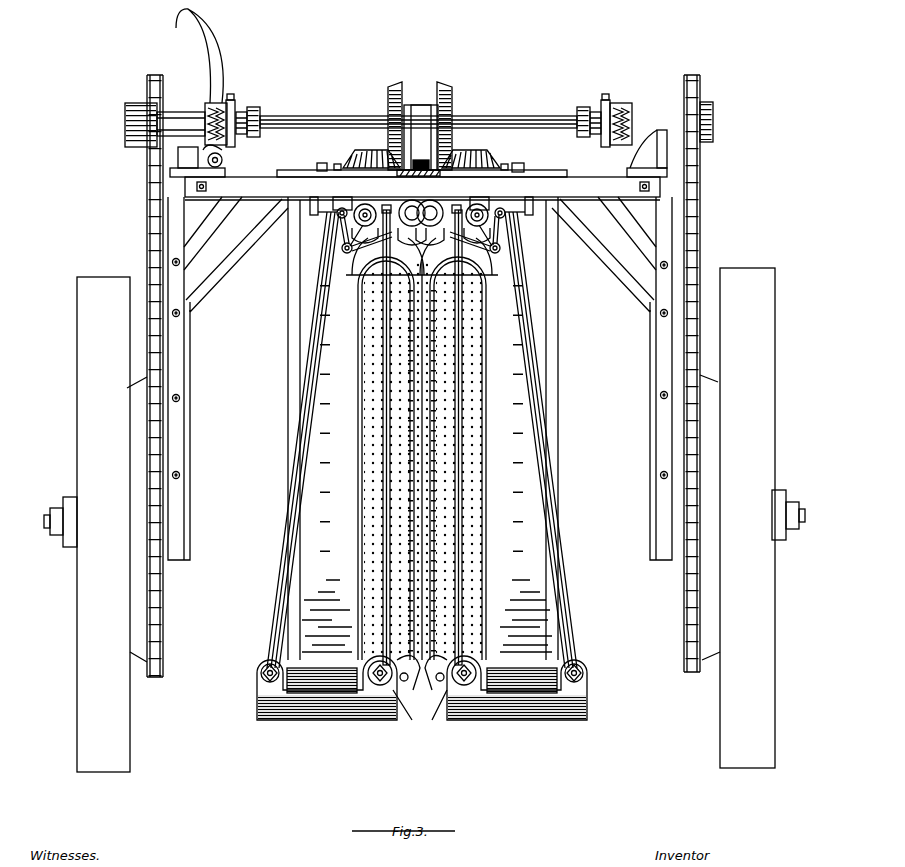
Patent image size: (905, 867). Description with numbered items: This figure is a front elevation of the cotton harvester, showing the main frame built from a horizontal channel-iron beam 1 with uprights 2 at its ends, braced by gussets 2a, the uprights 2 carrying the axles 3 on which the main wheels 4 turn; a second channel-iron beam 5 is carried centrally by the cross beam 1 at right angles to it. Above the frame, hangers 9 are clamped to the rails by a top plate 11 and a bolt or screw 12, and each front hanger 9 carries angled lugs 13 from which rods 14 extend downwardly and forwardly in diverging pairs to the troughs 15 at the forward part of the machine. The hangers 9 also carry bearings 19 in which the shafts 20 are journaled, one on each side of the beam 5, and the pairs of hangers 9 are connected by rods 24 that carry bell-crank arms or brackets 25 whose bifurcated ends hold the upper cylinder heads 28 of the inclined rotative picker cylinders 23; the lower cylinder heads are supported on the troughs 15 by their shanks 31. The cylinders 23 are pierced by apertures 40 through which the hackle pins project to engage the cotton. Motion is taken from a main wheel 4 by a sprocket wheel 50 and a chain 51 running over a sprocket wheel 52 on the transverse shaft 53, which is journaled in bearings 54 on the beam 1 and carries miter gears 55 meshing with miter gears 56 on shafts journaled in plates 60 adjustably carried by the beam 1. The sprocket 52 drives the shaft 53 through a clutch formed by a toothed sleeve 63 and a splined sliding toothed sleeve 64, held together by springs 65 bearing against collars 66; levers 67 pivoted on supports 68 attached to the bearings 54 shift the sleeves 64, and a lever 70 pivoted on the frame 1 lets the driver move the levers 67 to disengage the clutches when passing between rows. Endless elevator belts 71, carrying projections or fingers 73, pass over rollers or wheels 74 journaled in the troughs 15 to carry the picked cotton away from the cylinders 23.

The horizontal beam 1 is at (265, 186).
The uprights 2 is at (420, 378).
The gusset braces 2a is at (250, 252).
The axles 3 is at (680, 520).
The main wheels 4 is at (426, 520).
The beam 5 is at (418, 176).
The hangers 9 is at (476, 200).
The top plate 11 is at (297, 167).
The bolt or screw 12 is at (426, 160).
The lugs 13 is at (456, 192).
The rods 14 is at (370, 410).
The troughs 15 is at (422, 695).
The bearings 19 is at (378, 205).
The shafts 20 is at (362, 205).
The picker cylinders 23 is at (362, 558).
The rods 24 is at (340, 235).
The arms or brackets 25 is at (347, 254).
The cylinder heads 28 is at (424, 690).
The shanks 31 is at (440, 682).
The apertures 40 is at (480, 585).
The sprocket wheel 50 is at (693, 603).
The chain 51 is at (706, 240).
The sprocket wheel 52 is at (697, 92).
The shaft 53 is at (418, 113).
The bearings 54 is at (418, 141).
The miter gears 55 is at (419, 122).
The miter gears 56 is at (372, 160).
The plates 60 is at (338, 164).
The toothed sleeves 63 is at (212, 105).
The toothed collars or sleeves 64 is at (231, 99).
The springs 65 is at (244, 112).
The collars 66 is at (262, 112).
The levers 67 is at (236, 96).
The supports 68 is at (180, 123).
The lever 70 is at (201, 56).
The elevators 71 is at (411, 425).
The projections or fingers 73 is at (427, 557).
The rollers or wheels 74 is at (270, 688).